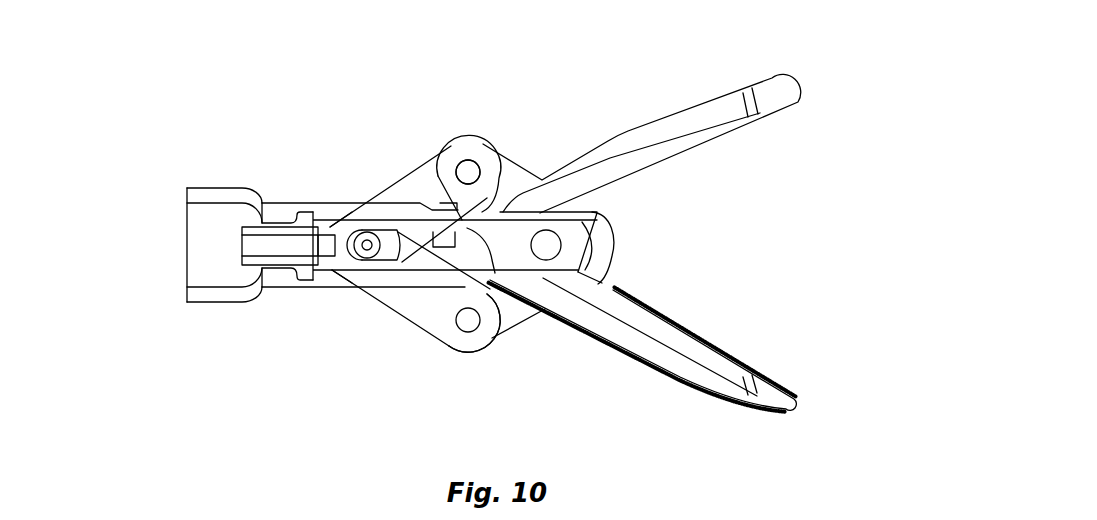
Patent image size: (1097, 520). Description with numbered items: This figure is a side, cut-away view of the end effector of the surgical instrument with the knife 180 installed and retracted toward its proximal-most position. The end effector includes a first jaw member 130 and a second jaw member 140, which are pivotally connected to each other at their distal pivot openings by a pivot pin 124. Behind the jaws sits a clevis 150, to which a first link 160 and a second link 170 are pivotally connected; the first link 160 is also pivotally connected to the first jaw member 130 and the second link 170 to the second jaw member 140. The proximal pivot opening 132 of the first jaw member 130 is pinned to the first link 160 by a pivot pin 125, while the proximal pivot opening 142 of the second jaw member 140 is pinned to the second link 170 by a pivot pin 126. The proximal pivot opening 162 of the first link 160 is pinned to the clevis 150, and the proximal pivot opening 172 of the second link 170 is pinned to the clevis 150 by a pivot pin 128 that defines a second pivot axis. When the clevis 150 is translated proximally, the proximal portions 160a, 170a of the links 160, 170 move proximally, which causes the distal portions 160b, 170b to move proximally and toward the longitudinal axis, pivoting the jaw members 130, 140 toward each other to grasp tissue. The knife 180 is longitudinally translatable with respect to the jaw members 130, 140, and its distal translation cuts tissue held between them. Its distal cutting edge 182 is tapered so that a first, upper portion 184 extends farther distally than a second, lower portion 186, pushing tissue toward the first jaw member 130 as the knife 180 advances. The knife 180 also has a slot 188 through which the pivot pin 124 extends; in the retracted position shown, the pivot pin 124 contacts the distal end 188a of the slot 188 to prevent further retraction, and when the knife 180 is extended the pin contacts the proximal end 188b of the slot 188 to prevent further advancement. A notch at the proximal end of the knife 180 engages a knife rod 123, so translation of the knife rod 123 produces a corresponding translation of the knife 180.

The knife rod 123 is at (280, 248).
The clevis 150 is at (303, 272).
The proximal end of slot 188b is at (347, 247).
The proximal pivot opening of second link 172 is at (353, 277).
The proximal pivot opening of first link 162 is at (354, 237).
The pivot pin 128 is at (358, 252).
The first link 160 is at (403, 178).
The proximal portion of first link 160a is at (361, 194).
The distal portion of first link 160b is at (437, 140).
The slot 188 is at (498, 313).
The pivot pin 125 is at (467, 163).
The proximal pivot opening of first jaw member 132 is at (471, 163).
The knife 180 is at (484, 210).
The second jaw member 140 is at (665, 117).
The pivot pin 124 is at (546, 214).
The first, upper portion of cutting edge 184 is at (606, 222).
The distal cutting edge 182 is at (611, 250).
The distal end of slot 188a is at (588, 214).
The second, lower portion of cutting edge 186 is at (601, 270).
The second link 170 is at (383, 303).
The proximal portion of second link 170a is at (368, 296).
The distal portion of second link 170b is at (426, 333).
The proximal pivot opening of second jaw member 142 is at (477, 338).
The pivot pin 126 is at (467, 320).
The first jaw member 130 is at (643, 350).